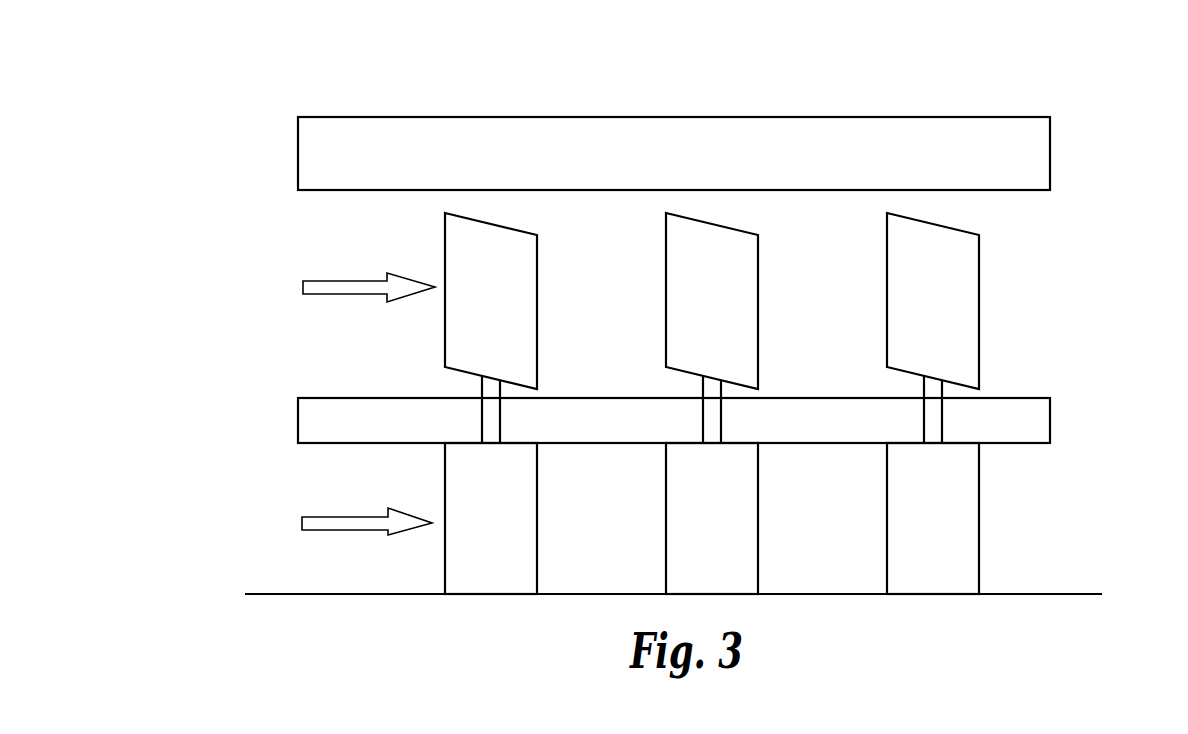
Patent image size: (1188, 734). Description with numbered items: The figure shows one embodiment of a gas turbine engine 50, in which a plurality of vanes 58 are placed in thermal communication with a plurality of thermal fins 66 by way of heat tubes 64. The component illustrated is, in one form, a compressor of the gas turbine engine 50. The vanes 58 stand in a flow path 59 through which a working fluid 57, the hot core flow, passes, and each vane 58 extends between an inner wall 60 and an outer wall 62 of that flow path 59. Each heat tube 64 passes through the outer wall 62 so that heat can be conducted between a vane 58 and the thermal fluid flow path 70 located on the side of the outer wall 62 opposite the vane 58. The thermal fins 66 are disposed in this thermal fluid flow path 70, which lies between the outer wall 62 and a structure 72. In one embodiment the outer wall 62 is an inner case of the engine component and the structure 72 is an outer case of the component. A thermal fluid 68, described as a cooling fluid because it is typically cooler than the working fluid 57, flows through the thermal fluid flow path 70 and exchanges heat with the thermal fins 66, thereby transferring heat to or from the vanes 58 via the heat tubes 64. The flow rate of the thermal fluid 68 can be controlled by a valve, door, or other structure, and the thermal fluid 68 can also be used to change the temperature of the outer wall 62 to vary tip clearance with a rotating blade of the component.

The gas turbine engine 50 is at (1066, 76).
The working fluid 57 is at (302, 530).
The vane 58 is at (538, 515).
The flow path 59 is at (838, 547).
The inner wall 60 is at (598, 594).
The outer wall 62 is at (298, 421).
The heat tube 64 is at (482, 390).
The thermal fin 66 is at (538, 290).
The thermal fluid 68 is at (303, 288).
The thermal fluid flow path 70 is at (614, 335).
The structure 72 is at (298, 141).